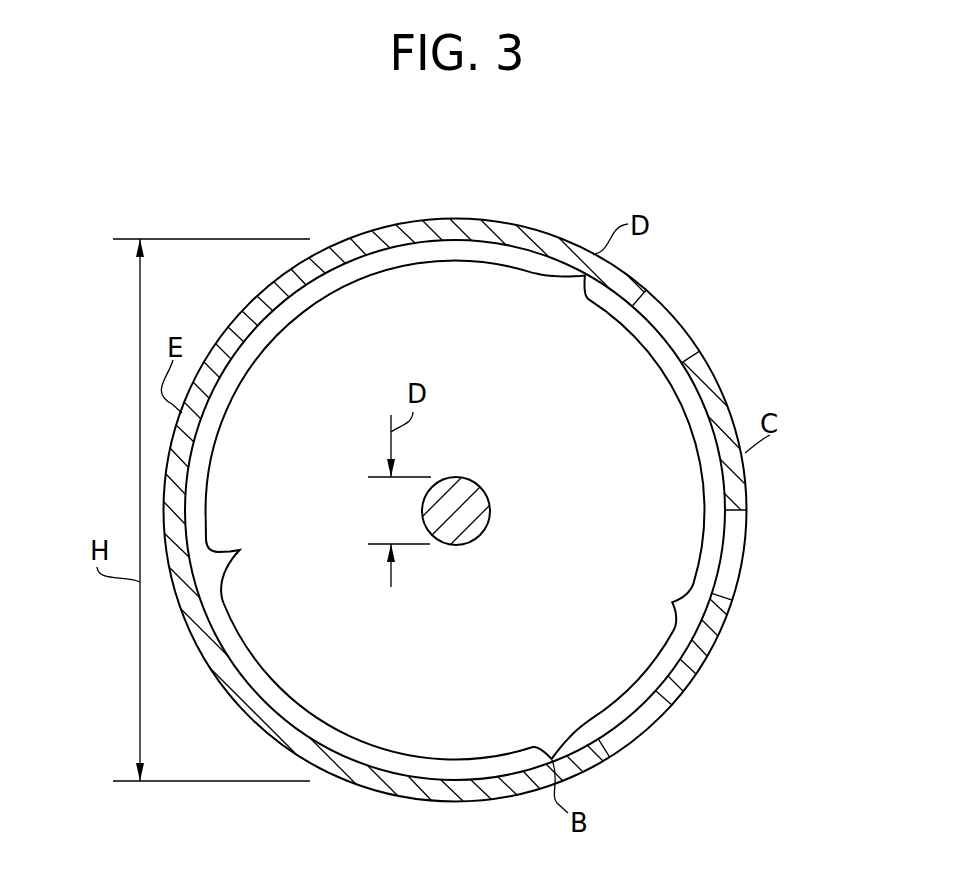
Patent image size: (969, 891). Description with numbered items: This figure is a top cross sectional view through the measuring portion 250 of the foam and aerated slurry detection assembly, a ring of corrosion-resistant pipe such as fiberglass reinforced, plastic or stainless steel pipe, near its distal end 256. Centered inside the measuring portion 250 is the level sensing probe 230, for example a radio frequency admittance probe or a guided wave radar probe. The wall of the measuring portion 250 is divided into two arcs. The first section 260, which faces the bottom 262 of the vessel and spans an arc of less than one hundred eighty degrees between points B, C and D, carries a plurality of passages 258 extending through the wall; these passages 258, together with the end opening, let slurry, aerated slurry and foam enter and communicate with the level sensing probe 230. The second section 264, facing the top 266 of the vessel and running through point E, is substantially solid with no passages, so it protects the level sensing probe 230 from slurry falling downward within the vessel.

The measuring portion 250 is at (502, 223).
The passages 258 is at (665, 330).
The distal end 256 is at (425, 713).
The first section 260 is at (672, 601).
The second section 264 is at (242, 550).
The level sensing probe 230 is at (475, 497).
The bottom 262 is at (833, 388).
The top 266 is at (55, 393).